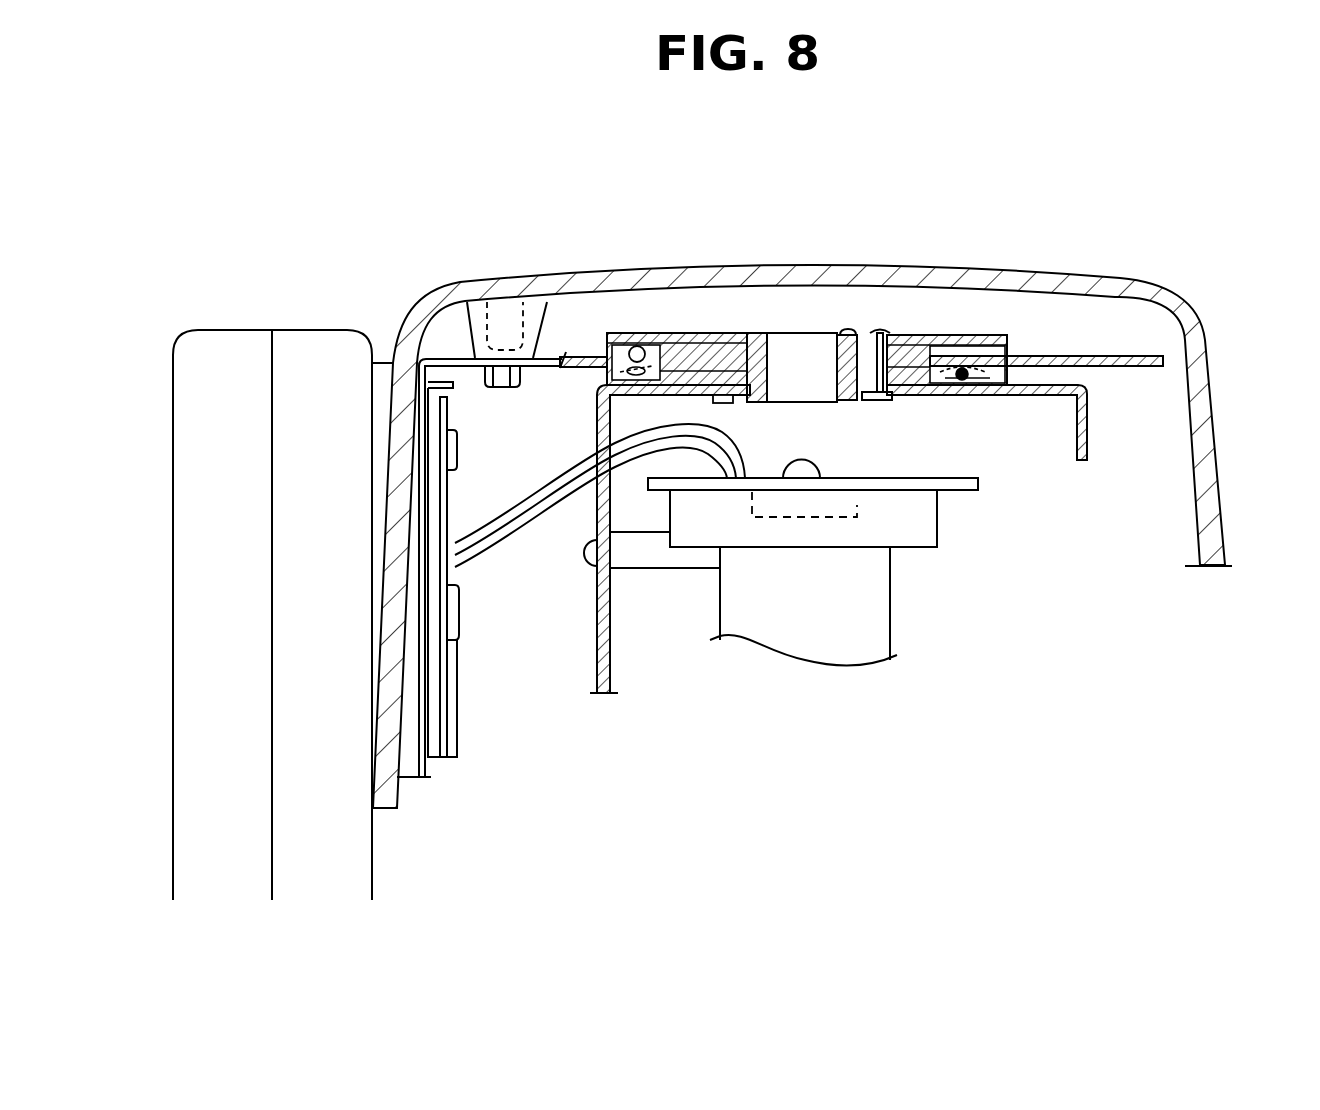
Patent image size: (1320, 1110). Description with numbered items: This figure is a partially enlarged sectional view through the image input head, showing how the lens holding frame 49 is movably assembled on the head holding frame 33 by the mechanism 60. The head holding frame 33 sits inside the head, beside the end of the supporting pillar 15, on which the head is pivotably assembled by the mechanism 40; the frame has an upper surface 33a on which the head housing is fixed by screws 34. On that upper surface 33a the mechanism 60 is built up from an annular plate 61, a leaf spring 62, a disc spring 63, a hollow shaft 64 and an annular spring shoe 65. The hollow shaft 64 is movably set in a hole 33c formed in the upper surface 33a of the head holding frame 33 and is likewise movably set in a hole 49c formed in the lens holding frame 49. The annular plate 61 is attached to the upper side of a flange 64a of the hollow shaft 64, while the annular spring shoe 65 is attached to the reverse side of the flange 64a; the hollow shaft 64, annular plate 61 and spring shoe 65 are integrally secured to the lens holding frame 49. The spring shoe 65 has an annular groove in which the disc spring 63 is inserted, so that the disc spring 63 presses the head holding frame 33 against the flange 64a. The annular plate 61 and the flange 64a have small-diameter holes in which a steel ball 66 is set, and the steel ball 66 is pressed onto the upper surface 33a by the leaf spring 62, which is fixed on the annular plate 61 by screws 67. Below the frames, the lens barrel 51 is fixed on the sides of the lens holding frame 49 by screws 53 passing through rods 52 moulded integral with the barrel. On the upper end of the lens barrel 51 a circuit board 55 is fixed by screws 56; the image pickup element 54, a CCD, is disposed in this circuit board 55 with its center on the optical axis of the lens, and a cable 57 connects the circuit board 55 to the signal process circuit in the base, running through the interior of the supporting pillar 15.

The supporting pillar 15 is at (360, 857).
The head holding frame 33 is at (427, 768).
The upper surface 33a is at (1145, 357).
The hole 33c is at (925, 340).
The screws 34 is at (500, 300).
The mechanism 40 is at (478, 732).
The lens holding frame 49 is at (1093, 387).
The hole 49c is at (750, 333).
The lens barrel 51 is at (873, 607).
The rods 52 is at (673, 565).
The screws 53 is at (584, 553).
The image pickup element 54 is at (857, 511).
The circuit board 55 is at (937, 398).
The screws 56 is at (802, 463).
The cable 57 is at (500, 533).
The mechanism 60 is at (787, 312).
The annular plate 61 is at (1000, 340).
The leaf spring 62 is at (689, 333).
The disc spring 63 is at (1087, 433).
The hollow shaft 64 is at (845, 330).
The flange 64a is at (998, 355).
The annular spring shoe 65 is at (973, 398).
The steel ball 66 is at (627, 342).
The screws 67 is at (881, 332).